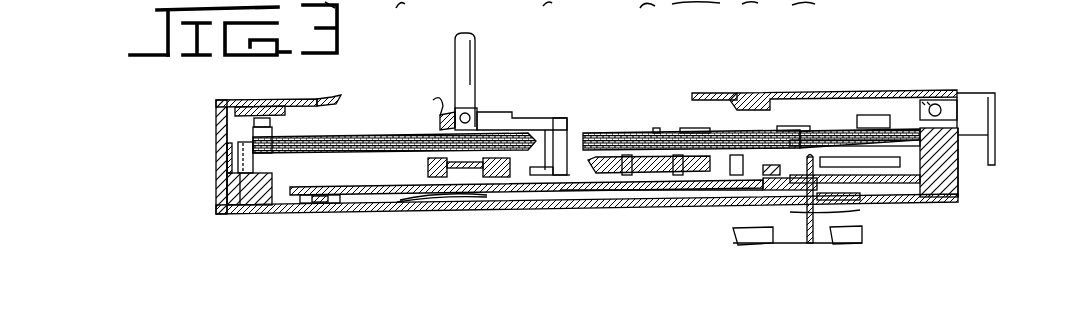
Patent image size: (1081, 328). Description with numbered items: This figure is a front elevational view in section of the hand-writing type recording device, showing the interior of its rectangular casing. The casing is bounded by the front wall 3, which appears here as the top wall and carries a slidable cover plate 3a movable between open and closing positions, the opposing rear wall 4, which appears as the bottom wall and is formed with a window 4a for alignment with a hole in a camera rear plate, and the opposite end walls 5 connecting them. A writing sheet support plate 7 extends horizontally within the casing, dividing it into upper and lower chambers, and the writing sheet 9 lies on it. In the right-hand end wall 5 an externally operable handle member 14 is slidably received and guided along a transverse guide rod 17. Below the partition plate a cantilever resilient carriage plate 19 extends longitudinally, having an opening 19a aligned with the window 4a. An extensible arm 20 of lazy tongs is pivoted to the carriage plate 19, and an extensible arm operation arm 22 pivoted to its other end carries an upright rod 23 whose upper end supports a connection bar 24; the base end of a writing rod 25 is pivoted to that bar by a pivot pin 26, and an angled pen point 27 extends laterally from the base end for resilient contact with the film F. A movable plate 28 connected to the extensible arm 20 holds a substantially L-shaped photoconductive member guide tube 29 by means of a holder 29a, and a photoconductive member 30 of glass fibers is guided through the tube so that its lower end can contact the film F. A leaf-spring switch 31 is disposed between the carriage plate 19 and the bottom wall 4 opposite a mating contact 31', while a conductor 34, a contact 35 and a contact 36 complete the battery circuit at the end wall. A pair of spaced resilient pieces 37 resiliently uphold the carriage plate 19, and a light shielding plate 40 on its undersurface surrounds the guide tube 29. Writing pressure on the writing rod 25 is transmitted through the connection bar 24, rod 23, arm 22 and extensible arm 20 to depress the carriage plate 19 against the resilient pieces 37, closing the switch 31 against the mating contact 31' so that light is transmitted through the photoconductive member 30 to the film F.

The front wall 3 is at (787, 92).
The slidable cover plate 3a is at (710, 93).
The rear wall 4 is at (615, 205).
The window 4a is at (830, 207).
The end walls 5 is at (225, 200).
The writing sheet support plate 7 is at (960, 136).
The writing sheet 9 is at (383, 137).
The handle member 14 is at (975, 107).
The guide rod 17 is at (935, 104).
The carriage plate 19 is at (642, 188).
The opening 19a is at (765, 188).
The extensible arm 20 is at (642, 156).
The extensible arm operation arm 22 is at (538, 178).
The upright rod 23 is at (570, 176).
The connection bar 24 is at (543, 123).
The writing rod 25 is at (476, 100).
The pivot pin 26 is at (479, 114).
The angled pen point 27 is at (437, 116).
The movable plate 28 is at (833, 160).
The photoconductive member guide tube 29 is at (813, 244).
The holder 29a is at (853, 157).
The photoconductive member 30 is at (803, 232).
The switch 31 is at (469, 207).
The mating contact 31' is at (442, 228).
The conductor 34 is at (218, 152).
The contact 35 is at (240, 205).
The contact 36 is at (298, 101).
The resilient pieces 37 is at (328, 211).
The light shielding plate 40 is at (710, 185).
The film F is at (862, 243).